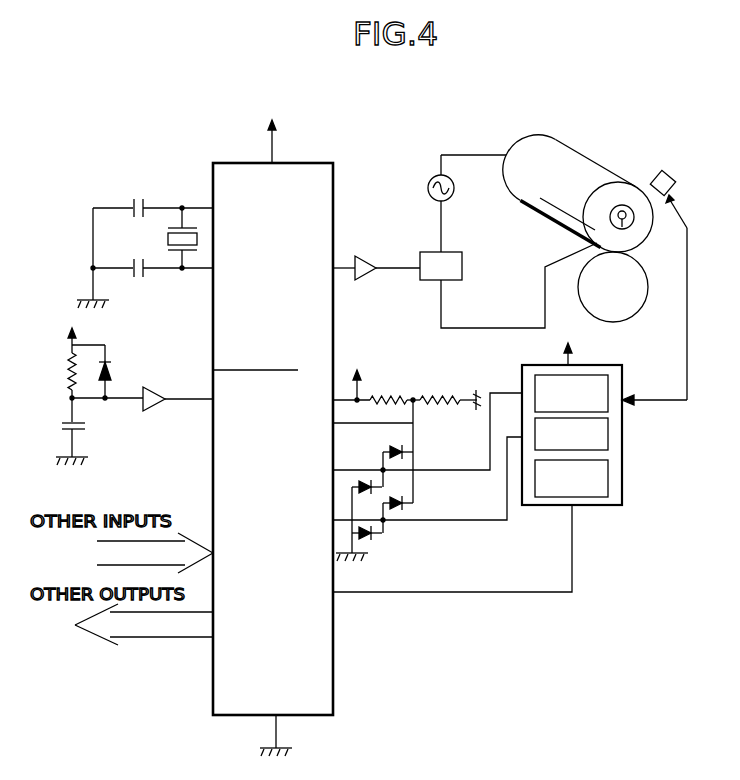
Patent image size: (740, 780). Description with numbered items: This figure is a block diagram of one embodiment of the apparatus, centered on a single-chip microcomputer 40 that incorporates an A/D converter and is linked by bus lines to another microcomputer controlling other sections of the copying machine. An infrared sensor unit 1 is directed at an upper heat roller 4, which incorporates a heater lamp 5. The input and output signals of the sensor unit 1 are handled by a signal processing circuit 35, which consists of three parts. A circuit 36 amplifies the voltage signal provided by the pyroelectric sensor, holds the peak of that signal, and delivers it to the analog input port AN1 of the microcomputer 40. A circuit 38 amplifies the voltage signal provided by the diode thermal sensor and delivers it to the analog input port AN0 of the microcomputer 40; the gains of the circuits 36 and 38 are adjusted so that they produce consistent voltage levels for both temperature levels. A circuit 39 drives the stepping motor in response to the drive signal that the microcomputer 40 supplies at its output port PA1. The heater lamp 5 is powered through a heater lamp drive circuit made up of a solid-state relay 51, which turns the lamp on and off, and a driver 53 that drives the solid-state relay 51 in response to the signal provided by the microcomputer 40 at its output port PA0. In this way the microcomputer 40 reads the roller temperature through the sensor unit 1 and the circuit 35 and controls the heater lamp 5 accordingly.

The infrared sensor unit 1 is at (670, 172).
The upper heat roller 4 is at (597, 163).
The heater lamp 5 is at (634, 220).
The signal processing circuit 35 is at (600, 424).
The pyroelectric sensor signal processing circuit 36 is at (571, 435).
The diode thermal sensor signal processing circuit 38 is at (571, 393).
The stepping motor drive circuit 39 is at (571, 478).
The single-chip microcomputer 40 is at (334, 657).
The solid-state relay 51 is at (462, 258).
The driver 53 is at (370, 258).